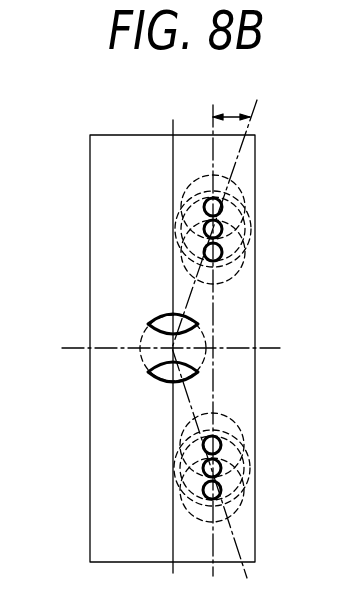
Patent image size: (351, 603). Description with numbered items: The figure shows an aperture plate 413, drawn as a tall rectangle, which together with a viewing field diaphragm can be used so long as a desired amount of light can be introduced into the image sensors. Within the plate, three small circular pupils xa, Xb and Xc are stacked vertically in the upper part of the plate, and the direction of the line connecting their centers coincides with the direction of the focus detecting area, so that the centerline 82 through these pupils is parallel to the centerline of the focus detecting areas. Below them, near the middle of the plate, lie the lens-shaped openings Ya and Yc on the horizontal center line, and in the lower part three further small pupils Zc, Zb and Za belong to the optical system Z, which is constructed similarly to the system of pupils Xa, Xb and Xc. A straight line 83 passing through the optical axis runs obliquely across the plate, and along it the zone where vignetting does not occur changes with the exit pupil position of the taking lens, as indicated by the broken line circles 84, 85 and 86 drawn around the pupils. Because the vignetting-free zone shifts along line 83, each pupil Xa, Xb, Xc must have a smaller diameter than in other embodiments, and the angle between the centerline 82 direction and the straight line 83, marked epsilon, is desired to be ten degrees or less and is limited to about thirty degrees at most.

The aperture plate 413 is at (107, 143).
The centerline 82 is at (210, 125).
The straight line 83 is at (254, 106).
The broken line circle 84 is at (200, 286).
The broken line circle 85 is at (173, 250).
The broken line circle 86 is at (198, 181).
The pupil Xa is at (222, 201).
The pupil Xb is at (224, 228).
The pupil Xc is at (222, 252).
The beam spot position Ya is at (198, 324).
The beam spot position Yc is at (198, 373).
The pupil of optical system Z Za is at (222, 493).
The pupil of optical system Z Zb is at (222, 469).
The pupil of optical system Z Zc is at (222, 444).